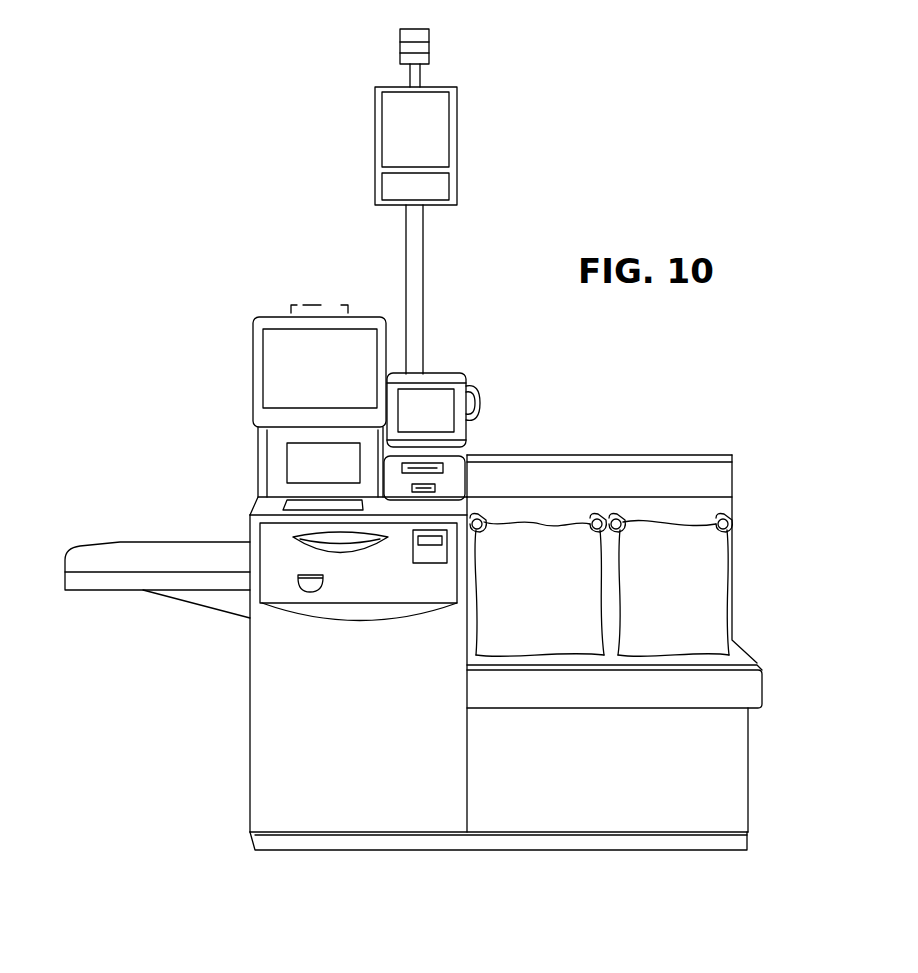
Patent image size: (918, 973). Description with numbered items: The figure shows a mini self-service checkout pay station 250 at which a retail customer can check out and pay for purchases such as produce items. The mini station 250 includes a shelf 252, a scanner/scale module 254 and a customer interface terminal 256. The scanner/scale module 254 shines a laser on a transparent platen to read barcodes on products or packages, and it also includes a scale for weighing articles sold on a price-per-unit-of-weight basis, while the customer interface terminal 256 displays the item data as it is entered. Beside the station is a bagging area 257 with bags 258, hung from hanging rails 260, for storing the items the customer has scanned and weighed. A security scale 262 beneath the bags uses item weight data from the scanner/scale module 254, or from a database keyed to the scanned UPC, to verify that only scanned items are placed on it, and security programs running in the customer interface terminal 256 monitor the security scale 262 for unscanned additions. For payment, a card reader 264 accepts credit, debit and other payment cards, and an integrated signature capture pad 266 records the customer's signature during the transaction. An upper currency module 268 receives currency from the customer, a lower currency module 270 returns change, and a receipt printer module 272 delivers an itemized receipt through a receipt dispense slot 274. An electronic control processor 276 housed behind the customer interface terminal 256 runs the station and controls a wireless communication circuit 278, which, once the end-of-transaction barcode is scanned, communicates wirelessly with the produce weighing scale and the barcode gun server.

The mini station 250 is at (148, 58).
The shelf 252 is at (93, 556).
The scanner/scale module 254 is at (295, 503).
The customer interface terminal 256 is at (283, 347).
The bagging area 257 is at (606, 492).
The bags 258 is at (538, 538).
The hanging rails 260 is at (480, 520).
The security scale 262 is at (735, 657).
The card reader 264 is at (470, 410).
The signature capture pad 266 is at (425, 400).
The upper currency module 268 is at (450, 480).
The lower currency module 270 is at (343, 592).
The receipt printer module 272 is at (420, 563).
The receipt dispense slot 274 is at (437, 545).
The electronic control processor 276 is at (326, 308).
The wireless communication circuit 278 is at (418, 45).